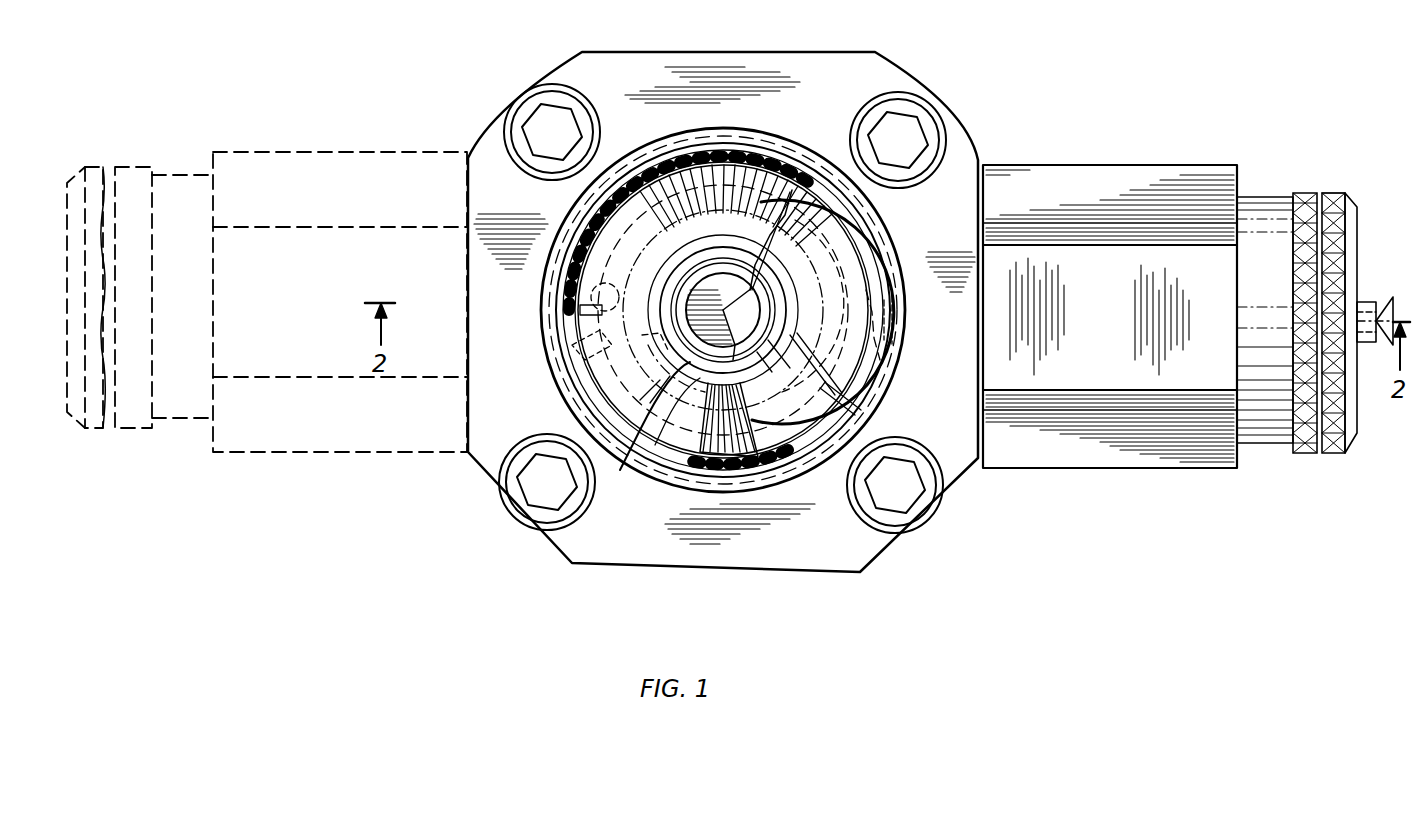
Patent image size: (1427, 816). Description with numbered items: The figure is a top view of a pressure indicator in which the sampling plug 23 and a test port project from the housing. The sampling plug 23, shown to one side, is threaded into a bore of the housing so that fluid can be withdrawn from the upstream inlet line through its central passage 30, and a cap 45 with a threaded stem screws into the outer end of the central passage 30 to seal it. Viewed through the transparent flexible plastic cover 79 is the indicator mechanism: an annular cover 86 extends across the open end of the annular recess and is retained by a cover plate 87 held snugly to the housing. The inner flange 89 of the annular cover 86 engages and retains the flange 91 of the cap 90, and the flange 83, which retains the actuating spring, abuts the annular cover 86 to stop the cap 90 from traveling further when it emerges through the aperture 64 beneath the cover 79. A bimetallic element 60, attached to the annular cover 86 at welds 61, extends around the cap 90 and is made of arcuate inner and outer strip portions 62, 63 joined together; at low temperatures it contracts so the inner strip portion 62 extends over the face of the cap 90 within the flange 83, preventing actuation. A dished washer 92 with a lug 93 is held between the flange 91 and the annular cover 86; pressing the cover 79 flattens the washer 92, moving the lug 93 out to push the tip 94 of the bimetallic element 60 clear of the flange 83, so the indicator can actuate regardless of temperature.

The sampling plug 23 is at (1108, 163).
The central passage 30 is at (1118, 308).
The cap 45 is at (1305, 192).
The bimetallic element 60 is at (583, 362).
The welds 61 is at (895, 323).
The inner strip portion 62 is at (663, 170).
The outer strip portion 63 is at (590, 215).
The aperture 64 is at (690, 365).
The transparent flexible plastic cover 79 is at (822, 273).
The flange 83 is at (676, 372).
The annular cover 86 is at (580, 310).
The cover plate 87 is at (868, 72).
The inner flange 89 is at (725, 365).
The cap 90 is at (712, 388).
The flange 91 is at (835, 376).
The dished washer 92 is at (737, 187).
The lug 93 is at (592, 292).
The tip 94 is at (575, 348).